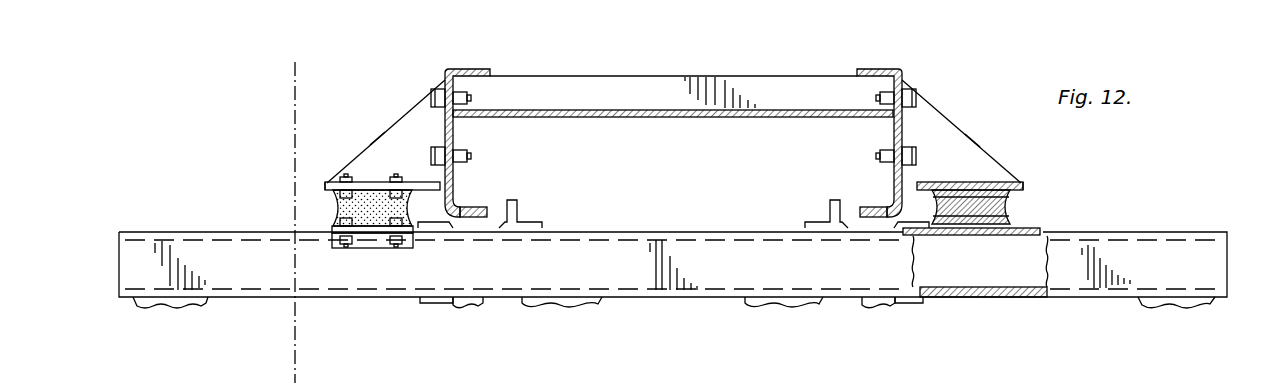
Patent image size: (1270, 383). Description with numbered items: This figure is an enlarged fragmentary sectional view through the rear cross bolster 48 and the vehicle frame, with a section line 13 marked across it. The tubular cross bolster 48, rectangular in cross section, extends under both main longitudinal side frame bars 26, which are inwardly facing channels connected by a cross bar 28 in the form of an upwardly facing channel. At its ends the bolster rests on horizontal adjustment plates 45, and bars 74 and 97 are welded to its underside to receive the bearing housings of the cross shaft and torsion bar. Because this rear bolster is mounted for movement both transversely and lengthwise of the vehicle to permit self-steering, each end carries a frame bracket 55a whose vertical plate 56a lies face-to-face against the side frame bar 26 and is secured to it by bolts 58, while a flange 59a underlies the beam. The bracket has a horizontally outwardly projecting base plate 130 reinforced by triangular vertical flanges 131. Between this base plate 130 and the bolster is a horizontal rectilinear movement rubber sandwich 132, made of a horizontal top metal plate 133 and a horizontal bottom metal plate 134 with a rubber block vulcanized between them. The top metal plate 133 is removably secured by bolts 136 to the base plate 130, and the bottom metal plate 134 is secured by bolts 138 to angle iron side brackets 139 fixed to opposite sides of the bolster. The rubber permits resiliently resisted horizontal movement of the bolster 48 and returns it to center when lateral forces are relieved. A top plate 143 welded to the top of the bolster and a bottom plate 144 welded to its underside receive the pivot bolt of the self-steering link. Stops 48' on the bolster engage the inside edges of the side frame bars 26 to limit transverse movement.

The section line 13- 13 is at (333, 73).
The main longitudinal side frame bar 26 is at (491, 59).
The cross bar 28 is at (684, 118).
The horizontal adjustment plate 45 is at (143, 300).
The tubular cross bolster 48 is at (673, 245).
The stop 48' is at (673, 211).
The frame bracket 55a is at (402, 102).
The vertical plate 56a is at (445, 122).
The bolt 58 is at (472, 98).
The flange 59a is at (471, 218).
The bar 74 is at (464, 304).
The bar 97 is at (568, 306).
The base plate 130 is at (361, 180).
The triangular vertical flange 131 is at (376, 138).
The rubber sandwich 132 is at (324, 207).
The top metal plate 133 is at (323, 185).
The bottom metal plate 134 is at (330, 226).
The bolt 136 is at (395, 180).
The bolt 138 is at (357, 247).
The angle iron side bracket 139 is at (339, 251).
The top plate 143 is at (917, 234).
The bottom plate 144 is at (432, 303).